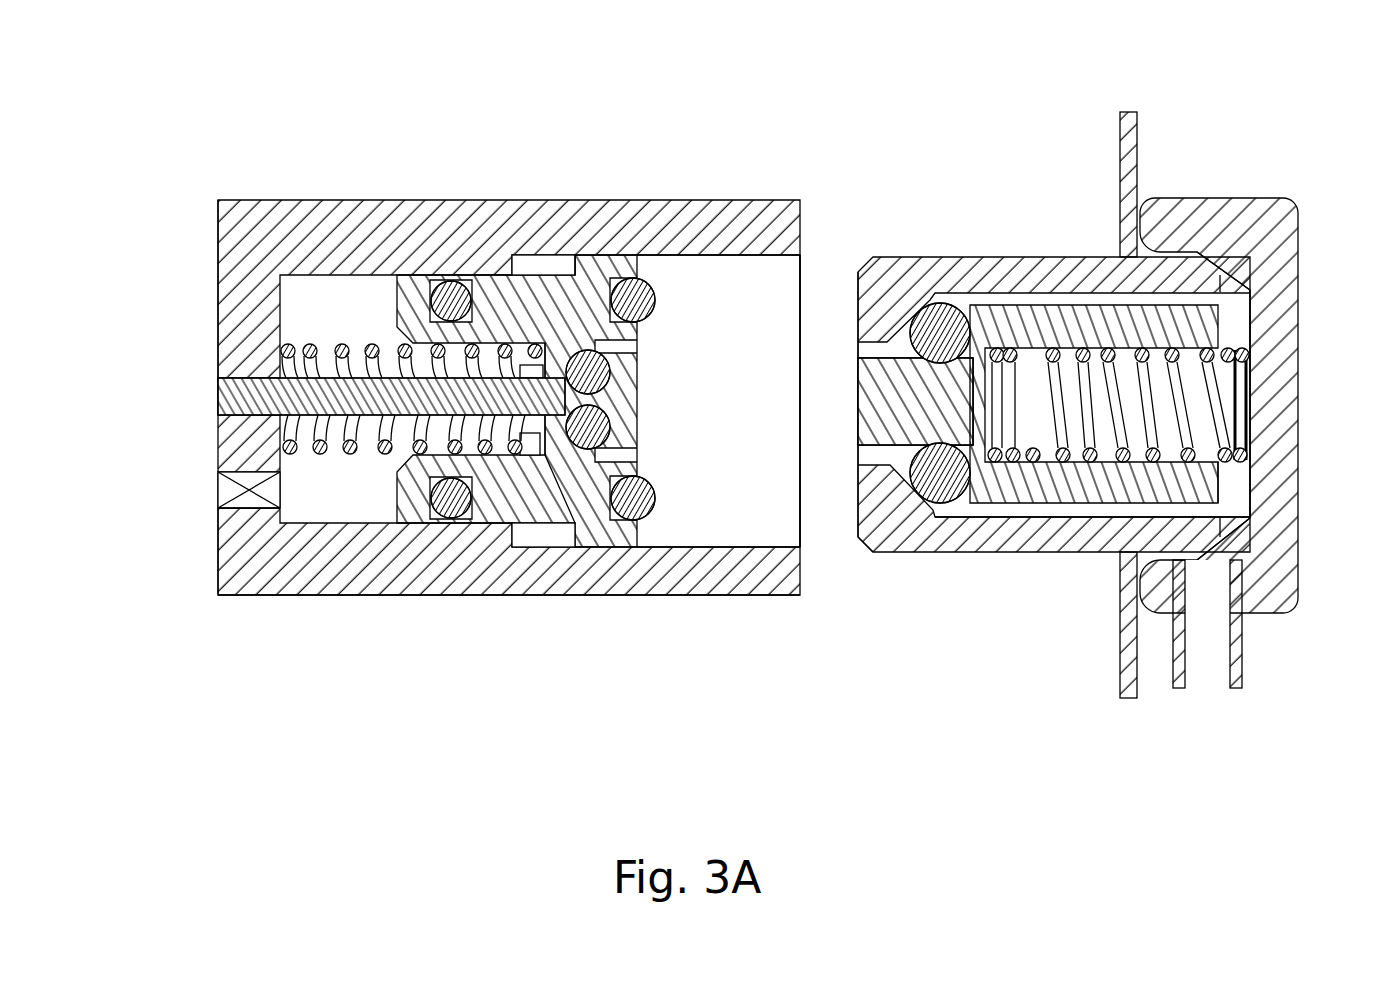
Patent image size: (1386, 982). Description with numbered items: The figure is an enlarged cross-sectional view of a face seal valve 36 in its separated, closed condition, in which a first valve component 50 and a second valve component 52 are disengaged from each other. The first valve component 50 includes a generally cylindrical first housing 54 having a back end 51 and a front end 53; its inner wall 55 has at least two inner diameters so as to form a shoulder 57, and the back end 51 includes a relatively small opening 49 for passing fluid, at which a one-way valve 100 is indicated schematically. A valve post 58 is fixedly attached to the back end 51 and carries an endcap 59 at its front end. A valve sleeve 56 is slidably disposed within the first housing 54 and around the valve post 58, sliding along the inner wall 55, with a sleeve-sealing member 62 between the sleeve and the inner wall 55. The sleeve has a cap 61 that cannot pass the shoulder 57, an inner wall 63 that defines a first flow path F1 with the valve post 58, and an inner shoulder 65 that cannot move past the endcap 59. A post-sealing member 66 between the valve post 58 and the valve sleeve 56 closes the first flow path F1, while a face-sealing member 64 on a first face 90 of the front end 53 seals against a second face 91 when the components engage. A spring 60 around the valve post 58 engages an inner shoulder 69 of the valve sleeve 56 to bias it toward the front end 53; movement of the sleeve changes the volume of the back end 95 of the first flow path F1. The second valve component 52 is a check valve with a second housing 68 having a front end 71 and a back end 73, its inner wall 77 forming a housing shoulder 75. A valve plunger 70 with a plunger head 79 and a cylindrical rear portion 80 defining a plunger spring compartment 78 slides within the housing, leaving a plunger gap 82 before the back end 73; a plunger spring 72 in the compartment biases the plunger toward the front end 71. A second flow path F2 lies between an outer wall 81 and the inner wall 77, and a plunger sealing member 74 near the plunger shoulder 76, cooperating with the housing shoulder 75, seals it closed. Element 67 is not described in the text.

The valve 36 is at (1043, 51).
The opening 49 is at (213, 502).
The first valve component 50 is at (312, 626).
The back end 51 is at (217, 268).
The receptacle body 52 is at (1268, 164).
The front end 53 is at (782, 600).
The first housing 54 is at (388, 572).
The inner wall 55 is at (765, 257).
The valve sleeve 56 is at (527, 503).
The shoulder 57 is at (503, 560).
The valve post 58 is at (217, 400).
The endcap 59 is at (652, 387).
The spring 60 is at (343, 340).
The cap 61 is at (610, 290).
The sleeve-sealing member 62 is at (440, 285).
The inner wall 63 is at (565, 500).
The face-sealing member 64 is at (645, 522).
The inner shoulder 65 is at (565, 300).
The post-sealing member 66 is at (500, 290).
The piston flange 67 is at (553, 537).
The second housing 68 is at (1090, 553).
The inner shoulder 69 is at (248, 552).
The valve plunger 70 is at (1053, 307).
The front end 71 is at (865, 545).
The plunger spring 72 is at (1022, 300).
The back end 73 is at (1258, 276).
The plunger sealing member 74 is at (948, 500).
The housing shoulder 75 is at (890, 313).
The plunger shoulder 76 is at (973, 497).
The inner wall 77 is at (1293, 555).
The plunger spring compartment 78 is at (1273, 613).
The plunger head 79 is at (868, 420).
The rear portion 80 is at (1193, 327).
The outer wall 81 is at (1207, 513).
The plunger gap 82 is at (1233, 330).
The first face 90 is at (638, 332).
The second face 91 is at (855, 292).
The back end 95 is at (334, 504).
The one-way valve 100 is at (217, 492).
The first flow path F1 is at (627, 452).
The second flow path F2 is at (1040, 510).